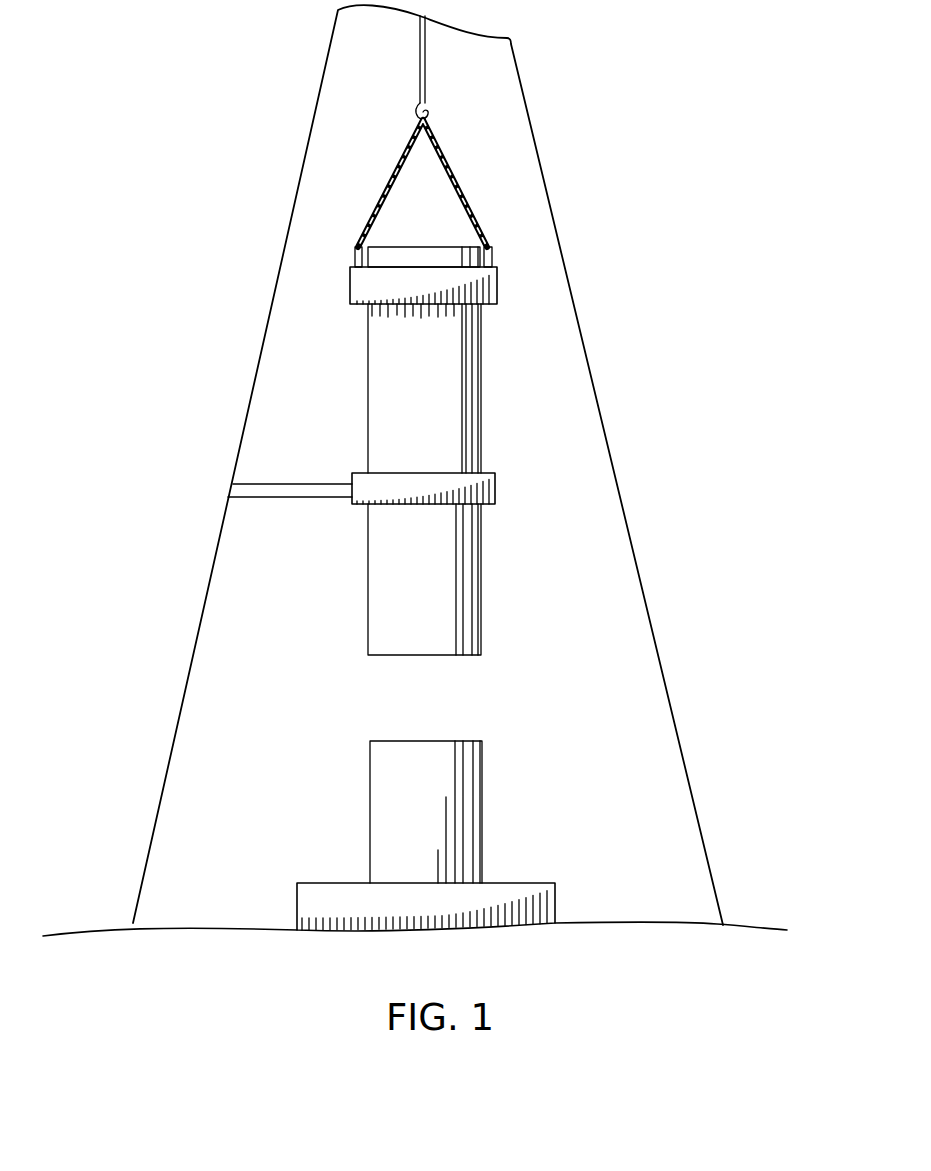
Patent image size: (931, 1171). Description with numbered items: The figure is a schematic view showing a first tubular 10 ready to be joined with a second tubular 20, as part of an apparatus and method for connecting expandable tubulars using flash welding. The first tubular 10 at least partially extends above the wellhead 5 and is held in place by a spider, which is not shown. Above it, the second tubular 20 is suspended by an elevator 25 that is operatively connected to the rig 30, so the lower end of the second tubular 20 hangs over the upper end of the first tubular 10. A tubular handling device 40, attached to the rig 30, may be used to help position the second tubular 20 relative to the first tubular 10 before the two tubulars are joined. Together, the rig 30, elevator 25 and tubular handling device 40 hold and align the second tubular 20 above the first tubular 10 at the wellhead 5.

The rig 30 is at (527, 95).
The elevator 25 is at (497, 286).
The second tubular 20 is at (481, 393).
The tubular handling device 40 is at (495, 492).
The first tubular 10 is at (483, 772).
The wellhead 5 is at (556, 902).